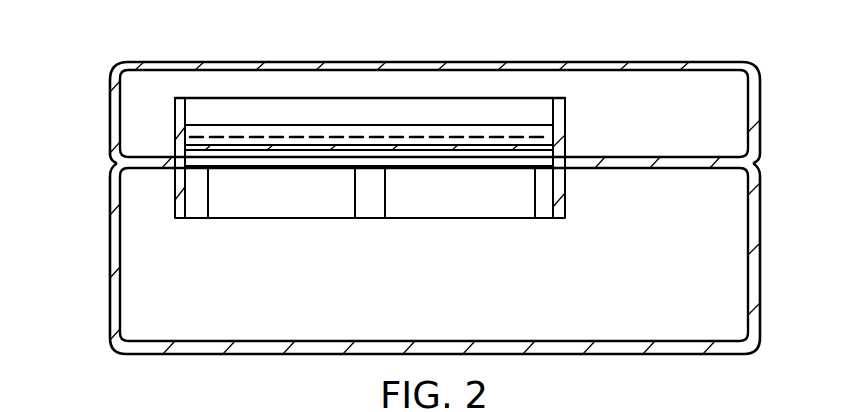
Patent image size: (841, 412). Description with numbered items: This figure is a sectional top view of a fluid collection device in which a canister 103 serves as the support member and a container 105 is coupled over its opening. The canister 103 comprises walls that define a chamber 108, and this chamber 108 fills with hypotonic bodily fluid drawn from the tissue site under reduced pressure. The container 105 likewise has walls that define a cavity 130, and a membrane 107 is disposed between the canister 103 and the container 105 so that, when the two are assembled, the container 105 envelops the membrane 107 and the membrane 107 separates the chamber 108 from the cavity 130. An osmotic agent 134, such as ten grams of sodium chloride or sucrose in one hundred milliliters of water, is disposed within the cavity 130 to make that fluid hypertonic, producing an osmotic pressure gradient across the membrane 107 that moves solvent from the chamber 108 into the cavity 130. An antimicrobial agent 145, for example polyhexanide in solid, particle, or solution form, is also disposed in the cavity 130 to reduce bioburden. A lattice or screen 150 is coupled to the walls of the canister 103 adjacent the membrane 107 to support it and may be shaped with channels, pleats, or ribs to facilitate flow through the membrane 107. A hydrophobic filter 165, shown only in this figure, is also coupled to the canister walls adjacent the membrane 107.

The canister 103 is at (110, 254).
The container 105 is at (110, 113).
The membrane 107 is at (498, 150).
The chamber 108 is at (715, 269).
The cavity 130 is at (715, 128).
The osmotic agent 134 is at (305, 108).
The antimicrobial agent 145 is at (250, 131).
The lattice or screen 150 is at (447, 138).
The hydrophobic filter 165 is at (277, 168).